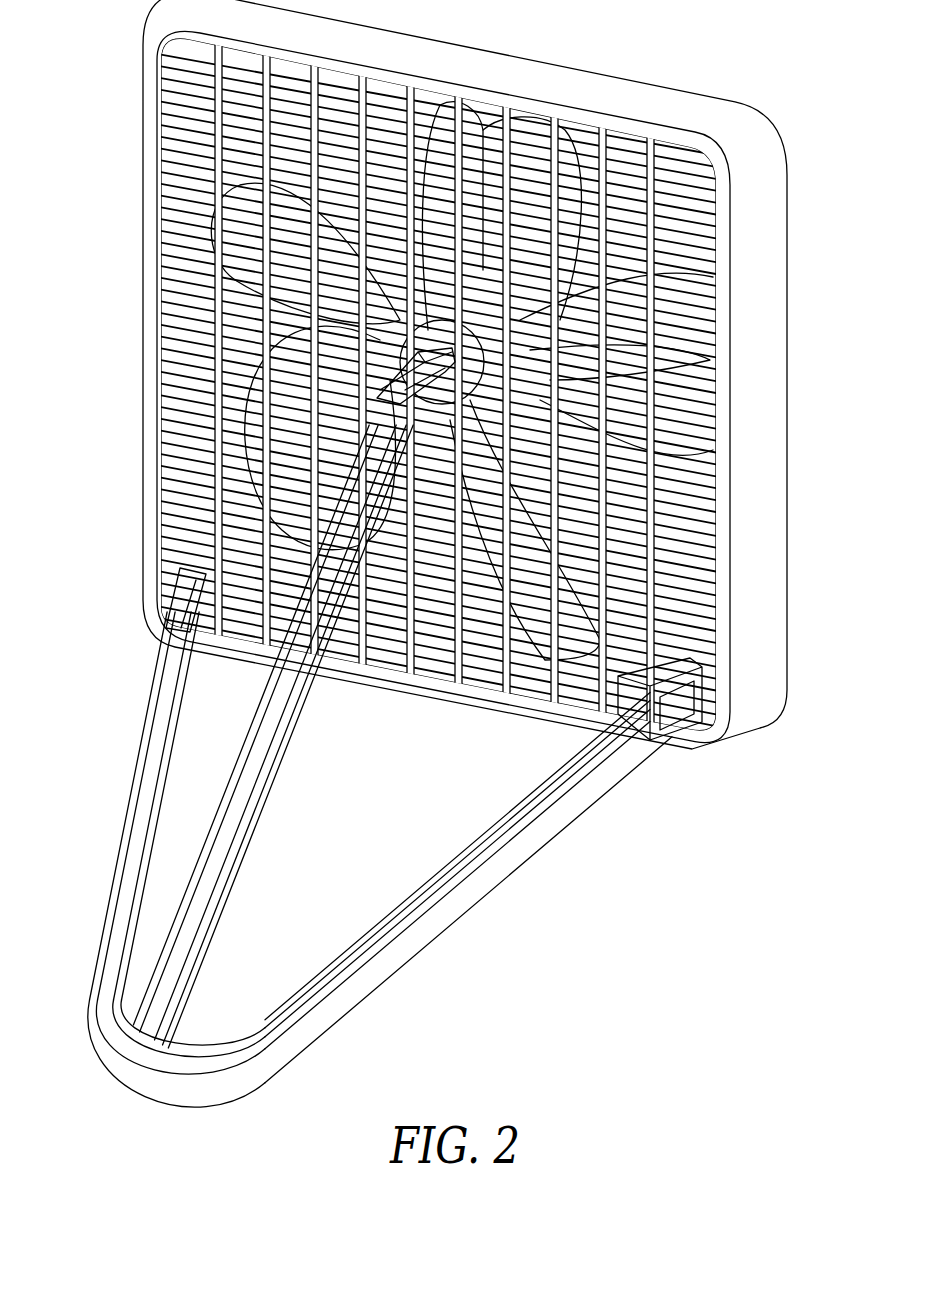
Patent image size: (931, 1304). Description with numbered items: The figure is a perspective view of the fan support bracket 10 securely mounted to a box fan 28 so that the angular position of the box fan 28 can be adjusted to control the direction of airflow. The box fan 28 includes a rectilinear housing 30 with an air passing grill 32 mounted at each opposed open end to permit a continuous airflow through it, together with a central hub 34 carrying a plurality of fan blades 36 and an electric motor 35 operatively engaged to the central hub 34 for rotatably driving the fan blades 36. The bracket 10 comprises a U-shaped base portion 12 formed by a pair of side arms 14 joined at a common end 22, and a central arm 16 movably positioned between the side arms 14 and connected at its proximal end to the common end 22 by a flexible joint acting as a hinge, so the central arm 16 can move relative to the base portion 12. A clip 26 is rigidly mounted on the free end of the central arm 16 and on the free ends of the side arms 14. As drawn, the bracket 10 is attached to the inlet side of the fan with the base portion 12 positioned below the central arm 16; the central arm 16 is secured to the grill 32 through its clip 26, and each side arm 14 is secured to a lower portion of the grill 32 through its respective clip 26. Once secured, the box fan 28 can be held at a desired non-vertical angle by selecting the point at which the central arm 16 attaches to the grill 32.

The fan support bracket 10 is at (302, 880).
The U-shaped base portion 12 is at (562, 832).
The side arms 14 is at (160, 772).
The central arm 16 is at (262, 812).
The common end 22 is at (130, 1075).
The clip 26 is at (212, 190).
The box fan 28 is at (781, 660).
The rectilinear housing 30 is at (755, 445).
The air passing grill 32 is at (712, 582).
The central hub 34 is at (693, 275).
The electric motor 35 is at (428, 330).
The fan blades 36 is at (540, 165).